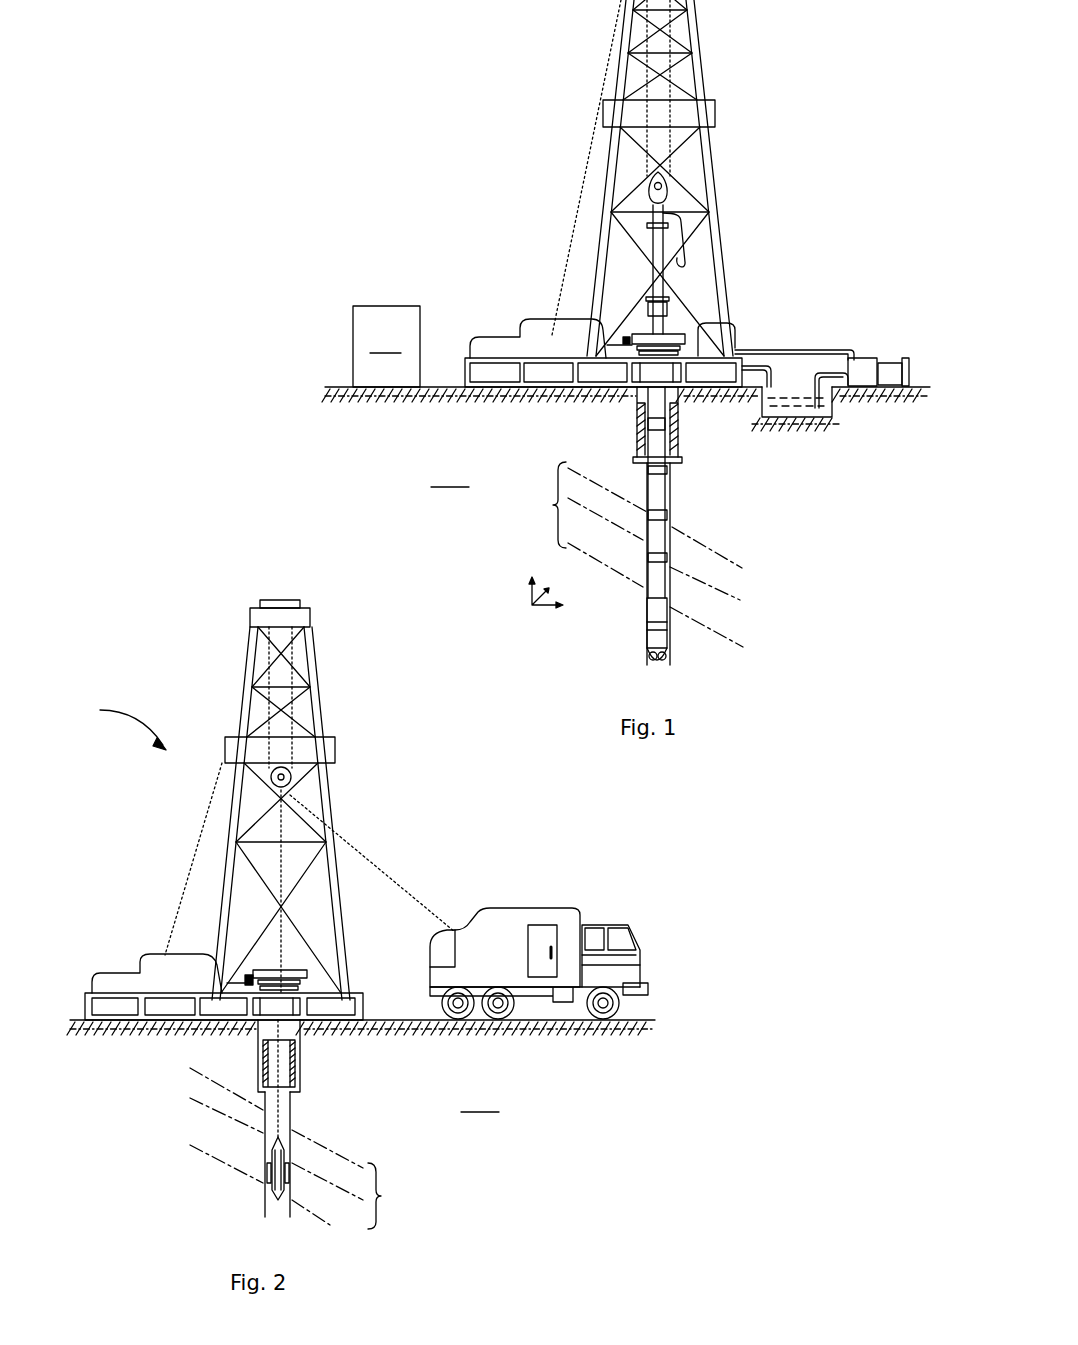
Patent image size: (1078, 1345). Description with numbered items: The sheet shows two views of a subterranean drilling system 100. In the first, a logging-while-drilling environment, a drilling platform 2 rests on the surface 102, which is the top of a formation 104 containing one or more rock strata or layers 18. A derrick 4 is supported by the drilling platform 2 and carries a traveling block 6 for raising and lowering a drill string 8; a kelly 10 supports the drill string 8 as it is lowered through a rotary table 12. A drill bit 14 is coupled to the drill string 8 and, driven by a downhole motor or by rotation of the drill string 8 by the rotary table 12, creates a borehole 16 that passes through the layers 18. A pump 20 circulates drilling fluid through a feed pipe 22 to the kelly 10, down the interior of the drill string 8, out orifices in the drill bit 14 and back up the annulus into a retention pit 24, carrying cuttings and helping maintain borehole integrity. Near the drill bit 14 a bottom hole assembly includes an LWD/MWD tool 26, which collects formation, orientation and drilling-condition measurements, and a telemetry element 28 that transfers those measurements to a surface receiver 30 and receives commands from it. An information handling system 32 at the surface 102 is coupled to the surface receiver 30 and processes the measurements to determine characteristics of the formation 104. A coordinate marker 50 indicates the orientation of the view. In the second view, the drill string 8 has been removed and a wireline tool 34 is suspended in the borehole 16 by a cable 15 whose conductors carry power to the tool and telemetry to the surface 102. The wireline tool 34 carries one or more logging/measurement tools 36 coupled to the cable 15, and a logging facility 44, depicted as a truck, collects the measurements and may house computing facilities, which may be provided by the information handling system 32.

In FIG. 1, the drilling platform 2 is at (465, 367).
In FIG. 2, the drilling platform 2 is at (366, 1010).
In FIG. 1, the derrick 4 is at (700, 76).
In FIG. 2, the derrick 4 is at (343, 900).
In FIG. 1, the traveling block 6 is at (668, 187).
In FIG. 2, the traveling block 6 is at (291, 776).
In FIG. 1, the drill string 8 is at (660, 495).
In FIG. 1, the kelly 10 is at (662, 242).
In FIG. 1, the rotary table 12 is at (676, 337).
In FIG. 2, the rotary table 12 is at (293, 968).
In FIG. 1, the drill bit 14 is at (672, 657).
In FIG. 2, the cable 15 is at (278, 1068).
In FIG. 1, the borehole 16 is at (675, 505).
In FIG. 2, the borehole 16 is at (288, 1120).
In FIG. 1, the rock strata or layers 18 is at (543, 505).
In FIG. 2, the rock strata or layers 18 is at (391, 1196).
In FIG. 1, the pump 20 is at (862, 360).
In FIG. 1, the feed pipe 22 is at (786, 350).
In FIG. 1, the retention pit 24 is at (781, 410).
In FIG. 1, the LWD/MWD tool 26 is at (652, 628).
In FIG. 1, the telemetry element 28 is at (652, 612).
In FIG. 1, the surface receiver 30 is at (664, 305).
In FIG. 1, the information handling system 32 is at (386, 346).
In FIG. 2, the wireline tool 34 is at (272, 1152).
In FIG. 2, the logging/measurement tool 36 is at (270, 1175).
In FIG. 2, the logging facility 44 is at (515, 908).
In FIG. 1, the coordinate system 50 is at (527, 600).
In FIG. 2, the subterranean drilling system 100 is at (109, 723).
In FIG. 1, the surface 102 is at (338, 385).
In FIG. 2, the surface 102 is at (78, 1020).
In FIG. 1, the formation 104 is at (587, 555).
In FIG. 2, the formation 104 is at (346, 1146).